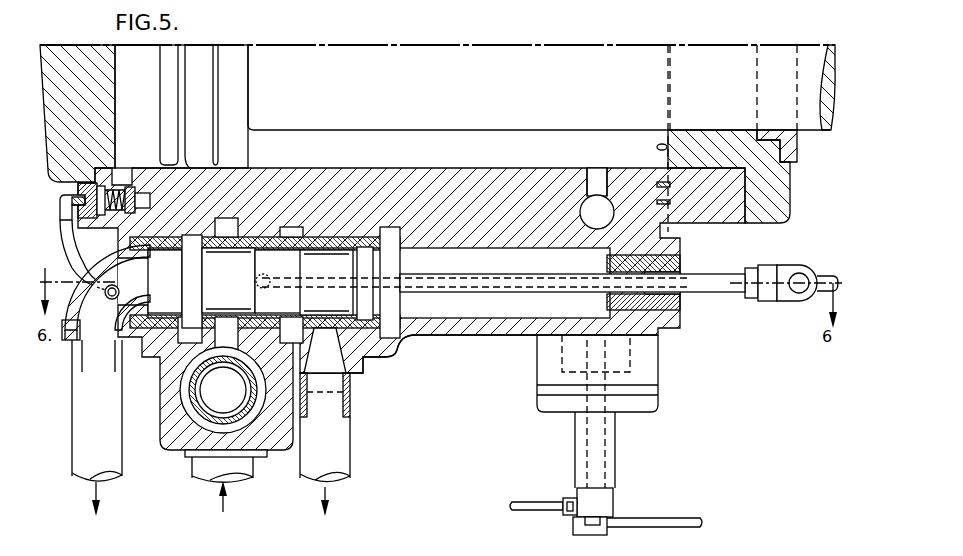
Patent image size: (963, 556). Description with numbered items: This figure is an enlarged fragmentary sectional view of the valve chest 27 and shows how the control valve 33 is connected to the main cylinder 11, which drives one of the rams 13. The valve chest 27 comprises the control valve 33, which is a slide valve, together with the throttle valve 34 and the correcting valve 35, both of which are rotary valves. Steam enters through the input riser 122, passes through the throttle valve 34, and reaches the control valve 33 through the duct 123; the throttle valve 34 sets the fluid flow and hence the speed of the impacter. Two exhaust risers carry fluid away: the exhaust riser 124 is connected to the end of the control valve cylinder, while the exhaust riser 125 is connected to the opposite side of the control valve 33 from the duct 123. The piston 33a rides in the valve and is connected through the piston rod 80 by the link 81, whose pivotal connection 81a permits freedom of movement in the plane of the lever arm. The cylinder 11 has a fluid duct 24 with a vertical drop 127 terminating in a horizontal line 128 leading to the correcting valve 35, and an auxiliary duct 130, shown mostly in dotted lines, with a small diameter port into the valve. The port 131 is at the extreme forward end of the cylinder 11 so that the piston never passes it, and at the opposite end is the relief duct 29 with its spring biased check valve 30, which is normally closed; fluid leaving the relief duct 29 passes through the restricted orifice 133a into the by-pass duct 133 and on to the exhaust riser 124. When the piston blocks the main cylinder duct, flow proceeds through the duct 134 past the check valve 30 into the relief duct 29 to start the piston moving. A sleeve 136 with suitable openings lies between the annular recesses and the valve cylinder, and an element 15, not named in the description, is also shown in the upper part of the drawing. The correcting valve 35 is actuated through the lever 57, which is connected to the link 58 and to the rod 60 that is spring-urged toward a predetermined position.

The main cylinder 11 is at (356, 168).
The ram 13 is at (490, 121).
The housing member 15 is at (168, 88).
The fluid duct 24 is at (590, 178).
The valve chest 27 is at (446, 338).
The relief duct 29 is at (124, 176).
The spring biased check valve 30 is at (133, 203).
The control valve 33 is at (228, 249).
The piston 33a is at (191, 263).
The throttle valve 34 is at (204, 399).
The correcting valve 35 is at (552, 364).
The lever 57 is at (603, 528).
The link 58 is at (659, 519).
The rod 60 is at (528, 502).
The piston rod 80 is at (497, 284).
The link 81 is at (826, 276).
The pivotal connection 81a is at (797, 294).
The input riser 122 is at (208, 479).
The duct 123 is at (224, 320).
The exhaust riser 124 is at (76, 478).
The exhaust riser 125 is at (345, 479).
The vertical drop 127 is at (608, 172).
The horizontal line 128 is at (597, 198).
The auxiliary duct 130 is at (502, 276).
The port into the cylinder 131 is at (661, 144).
The by-pass duct 133 is at (72, 250).
The restricted orifice 133a is at (81, 234).
The duct 134 is at (186, 166).
The sleeve 136 is at (381, 306).